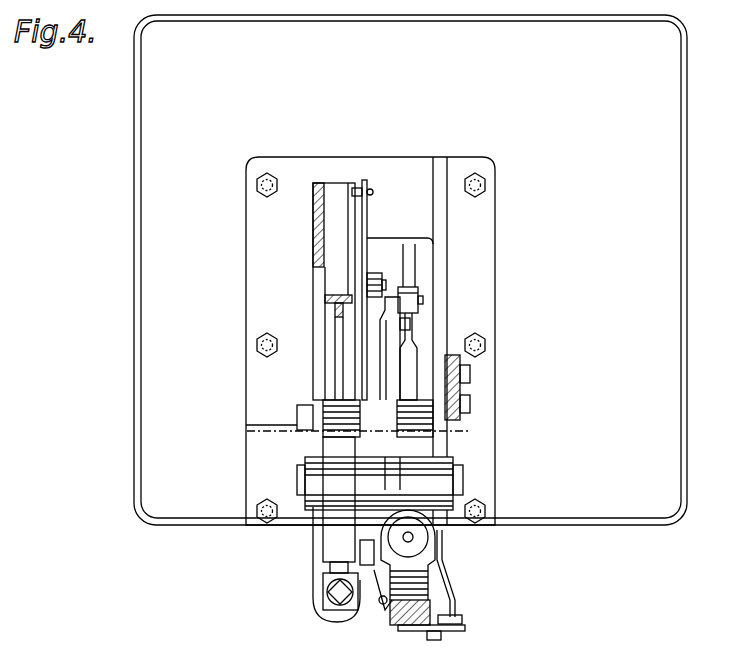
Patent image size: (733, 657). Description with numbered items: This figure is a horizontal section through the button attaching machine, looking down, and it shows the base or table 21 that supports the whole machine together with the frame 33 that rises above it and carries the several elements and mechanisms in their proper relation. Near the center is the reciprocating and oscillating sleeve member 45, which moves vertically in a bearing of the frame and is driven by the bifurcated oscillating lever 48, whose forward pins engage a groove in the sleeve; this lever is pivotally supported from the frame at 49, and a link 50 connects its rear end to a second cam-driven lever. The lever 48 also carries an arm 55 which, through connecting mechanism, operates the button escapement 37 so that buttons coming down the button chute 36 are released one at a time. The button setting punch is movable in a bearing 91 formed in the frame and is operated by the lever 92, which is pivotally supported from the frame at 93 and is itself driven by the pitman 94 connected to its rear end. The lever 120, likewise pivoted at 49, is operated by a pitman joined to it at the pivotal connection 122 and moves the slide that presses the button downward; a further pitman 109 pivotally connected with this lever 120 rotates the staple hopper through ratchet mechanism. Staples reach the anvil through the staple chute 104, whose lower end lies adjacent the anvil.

The base or table 21 is at (657, 100).
The frame 33 is at (475, 250).
The staple chute 104 is at (335, 323).
The pitman 109 is at (373, 193).
The pivotal connection 122 is at (400, 262).
The lever 120 is at (370, 358).
The link 50 is at (412, 307).
The pitman 94 is at (410, 327).
The lever 92 is at (390, 395).
The bifurcated oscillating lever 48 is at (436, 440).
The pivot support 49 is at (462, 400).
The pivot support 93 is at (300, 478).
The bearing 91 is at (318, 595).
The sleeve member 45 is at (418, 533).
The arm 55 is at (444, 583).
The button chute 36 is at (393, 622).
The button escapement 37 is at (437, 641).